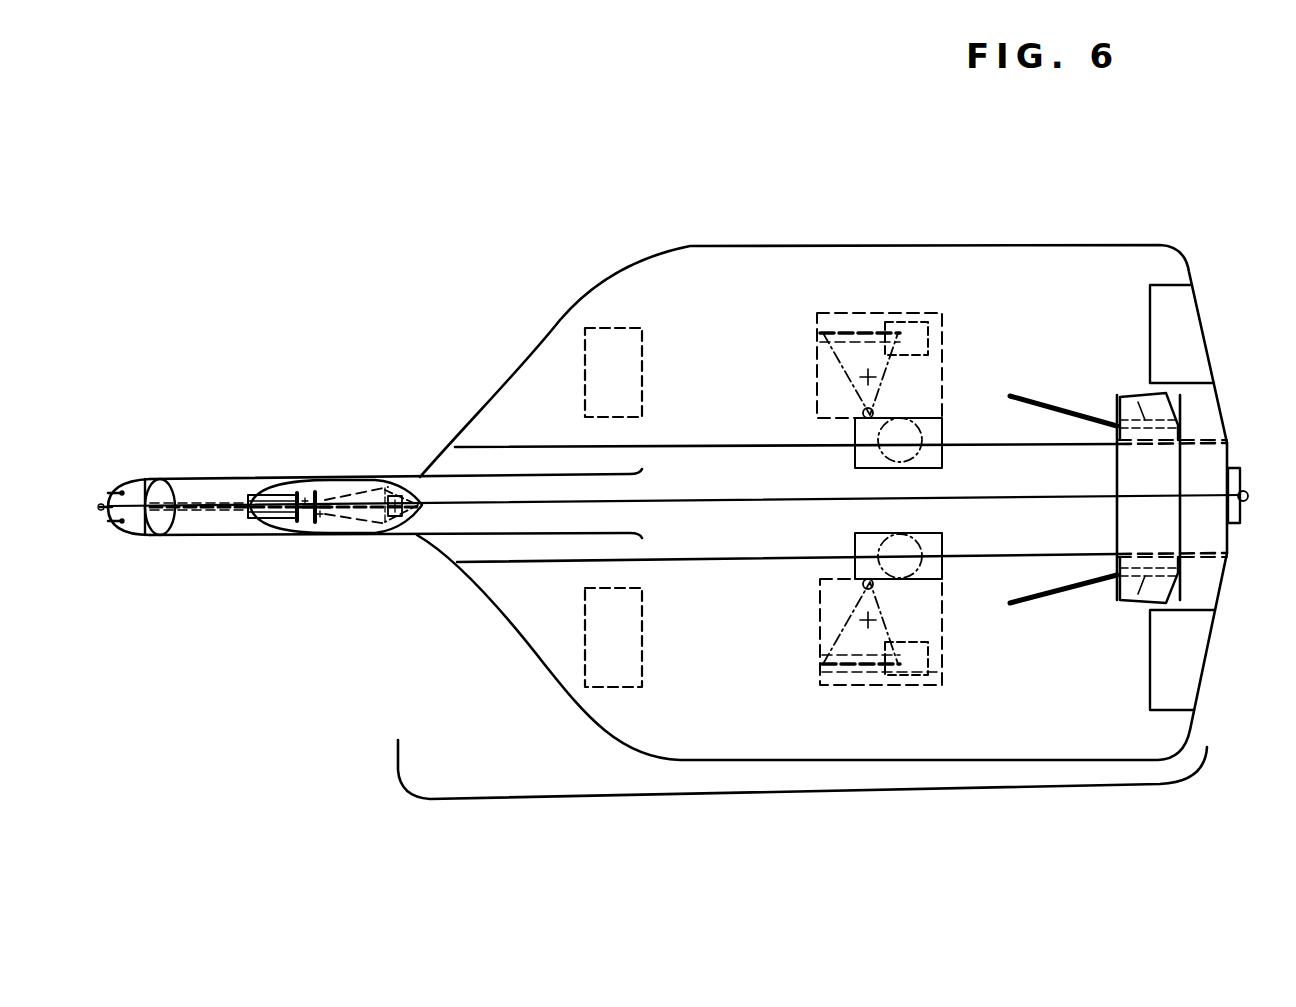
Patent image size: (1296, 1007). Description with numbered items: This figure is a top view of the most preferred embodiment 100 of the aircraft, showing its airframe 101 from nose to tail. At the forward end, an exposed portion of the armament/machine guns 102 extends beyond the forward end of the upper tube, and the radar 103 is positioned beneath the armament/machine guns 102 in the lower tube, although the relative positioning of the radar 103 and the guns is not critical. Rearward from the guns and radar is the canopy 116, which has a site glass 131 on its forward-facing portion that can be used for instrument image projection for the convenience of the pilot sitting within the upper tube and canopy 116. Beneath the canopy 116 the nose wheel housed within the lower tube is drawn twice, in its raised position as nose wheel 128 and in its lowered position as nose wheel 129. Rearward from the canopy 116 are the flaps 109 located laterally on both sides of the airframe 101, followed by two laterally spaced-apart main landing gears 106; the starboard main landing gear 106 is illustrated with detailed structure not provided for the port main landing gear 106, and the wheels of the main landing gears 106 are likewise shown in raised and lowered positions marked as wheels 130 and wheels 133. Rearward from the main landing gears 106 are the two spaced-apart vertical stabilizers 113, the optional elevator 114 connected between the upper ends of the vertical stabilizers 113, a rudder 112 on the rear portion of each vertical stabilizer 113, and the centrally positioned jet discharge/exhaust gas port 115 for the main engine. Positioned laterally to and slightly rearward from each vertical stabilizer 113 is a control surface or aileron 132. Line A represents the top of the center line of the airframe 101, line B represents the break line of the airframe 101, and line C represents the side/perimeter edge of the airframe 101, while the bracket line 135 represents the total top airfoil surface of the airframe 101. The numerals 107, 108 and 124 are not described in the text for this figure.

The most preferred embodiment 100 is at (690, 488).
The airframe 101 is at (648, 292).
The armament/machine guns 102 is at (112, 490).
The radar 103 is at (158, 542).
The main landing gears 106 is at (858, 358).
The lower rotor hub 107 is at (868, 545).
The lower motor housing 108 is at (928, 608).
The flaps 109 is at (610, 623).
The rudder 112 is at (1170, 410).
The vertical stabilizers 113 is at (1080, 403).
The elevator 114 is at (1147, 506).
The jet discharge/exhaust gas port 115 is at (1242, 489).
The canopy 116 is at (341, 490).
The lower mount strip 124 is at (828, 686).
The raised nose wheel 128 is at (297, 496).
The lowered nose wheel 129 is at (409, 487).
The raised main landing gear wheels 130 is at (918, 450).
The site glass 131 is at (279, 512).
The aileron 132 is at (1174, 322).
The lowered main landing gear wheels 133 is at (914, 325).
The bracket line 135 is at (823, 792).
The center line A is at (450, 518).
The break line B is at (518, 575).
The side/perimeter edge C is at (512, 377).